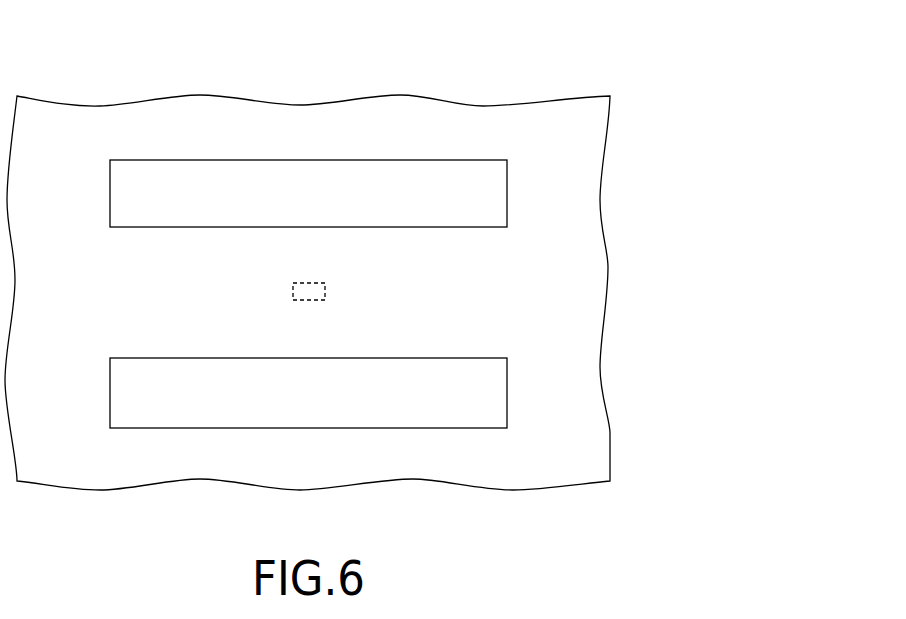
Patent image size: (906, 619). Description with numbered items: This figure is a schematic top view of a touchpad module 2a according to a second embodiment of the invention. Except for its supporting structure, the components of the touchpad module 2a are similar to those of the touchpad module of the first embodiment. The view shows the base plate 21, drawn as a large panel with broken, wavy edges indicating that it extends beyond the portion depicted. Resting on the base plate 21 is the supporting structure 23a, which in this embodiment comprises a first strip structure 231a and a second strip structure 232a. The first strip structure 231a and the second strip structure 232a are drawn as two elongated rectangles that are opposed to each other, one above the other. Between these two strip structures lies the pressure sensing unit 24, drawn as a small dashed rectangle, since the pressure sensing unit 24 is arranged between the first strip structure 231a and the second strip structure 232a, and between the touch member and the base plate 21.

The touchpad module 2a is at (578, 34).
The base plate 21 is at (415, 110).
The supporting structure 23a is at (92, 5).
The first strip structure 231a is at (430, 212).
The second strip structure 232a is at (390, 372).
The pressure sensing unit 24 is at (310, 282).